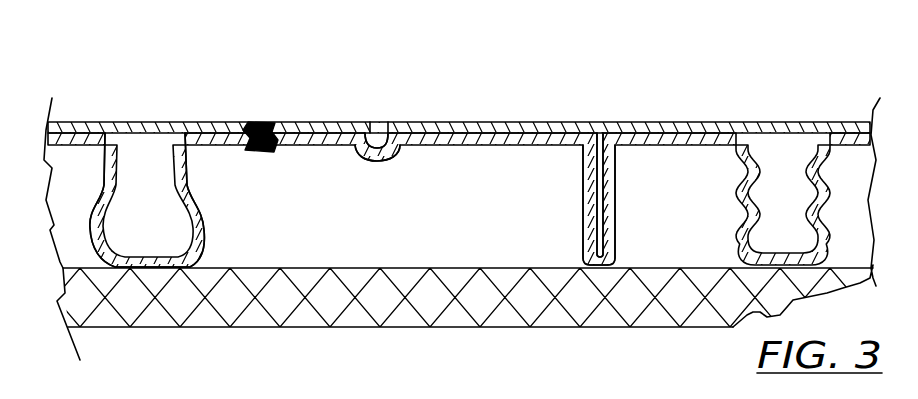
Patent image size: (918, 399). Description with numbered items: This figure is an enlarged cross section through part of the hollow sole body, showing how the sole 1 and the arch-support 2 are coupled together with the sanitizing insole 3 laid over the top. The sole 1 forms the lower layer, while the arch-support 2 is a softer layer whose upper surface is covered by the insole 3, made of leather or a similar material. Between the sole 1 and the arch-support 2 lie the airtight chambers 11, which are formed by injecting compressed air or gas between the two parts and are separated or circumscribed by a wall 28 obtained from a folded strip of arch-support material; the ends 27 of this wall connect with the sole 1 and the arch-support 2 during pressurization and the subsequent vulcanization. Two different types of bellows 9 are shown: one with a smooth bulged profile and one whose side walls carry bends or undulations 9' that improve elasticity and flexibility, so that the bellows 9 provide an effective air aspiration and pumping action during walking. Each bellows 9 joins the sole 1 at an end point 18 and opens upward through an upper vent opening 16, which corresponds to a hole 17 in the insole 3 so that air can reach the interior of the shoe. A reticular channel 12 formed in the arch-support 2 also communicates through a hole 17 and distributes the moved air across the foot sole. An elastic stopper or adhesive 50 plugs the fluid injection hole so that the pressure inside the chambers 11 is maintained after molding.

The sole 1 is at (323, 292).
The arch-support 2 is at (532, 140).
The sanitizing insole 3 is at (652, 128).
The bellows 9 is at (498, 200).
The bends or undulations 9' is at (707, 188).
The airtight chamber 11 is at (705, 123).
The reticular channel 12 is at (387, 142).
The upper vent opening 16 is at (137, 173).
The hole 17 is at (147, 123).
The end point 18 is at (143, 269).
The end 27 is at (598, 266).
The wall 28 is at (590, 208).
The elastic stopper or adhesive 50 is at (253, 125).